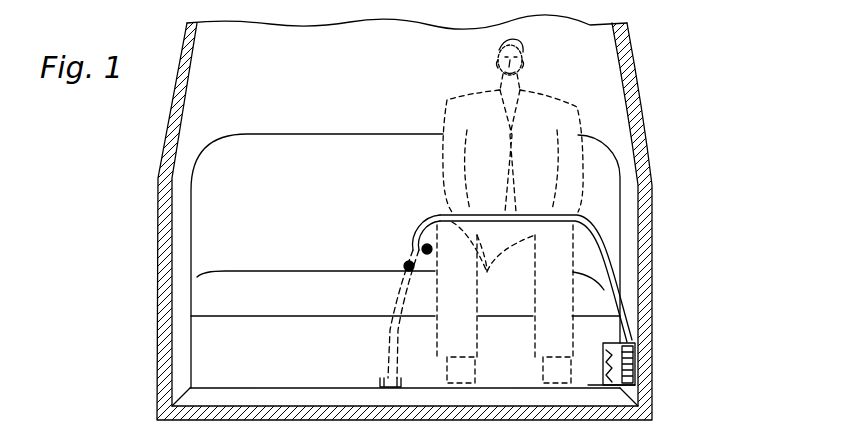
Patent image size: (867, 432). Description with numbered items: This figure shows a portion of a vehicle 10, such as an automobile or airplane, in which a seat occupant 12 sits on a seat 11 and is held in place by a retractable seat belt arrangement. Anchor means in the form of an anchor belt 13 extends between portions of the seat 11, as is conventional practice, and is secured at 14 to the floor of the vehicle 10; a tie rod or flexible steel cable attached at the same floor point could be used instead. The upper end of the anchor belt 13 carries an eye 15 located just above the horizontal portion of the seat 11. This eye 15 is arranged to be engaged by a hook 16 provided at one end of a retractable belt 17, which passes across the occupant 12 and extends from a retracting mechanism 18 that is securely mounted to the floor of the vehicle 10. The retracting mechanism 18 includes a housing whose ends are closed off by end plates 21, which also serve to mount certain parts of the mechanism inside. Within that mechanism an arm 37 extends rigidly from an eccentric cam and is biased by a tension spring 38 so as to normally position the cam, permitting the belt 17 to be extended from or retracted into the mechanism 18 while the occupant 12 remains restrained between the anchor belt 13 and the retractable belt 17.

The vehicle 10 is at (658, 100).
The seat 11 is at (307, 124).
The seat occupant 12 is at (452, 81).
The anchor belt 13 is at (392, 297).
The floor securing point 14 is at (386, 378).
The eye 15 is at (404, 267).
The hook 16 is at (421, 250).
The retractable belt 17 is at (592, 244).
The retracting mechanism 18 is at (609, 333).
The end plates 21 is at (633, 378).
The arm 37 is at (633, 362).
The tension spring 38 is at (608, 397).